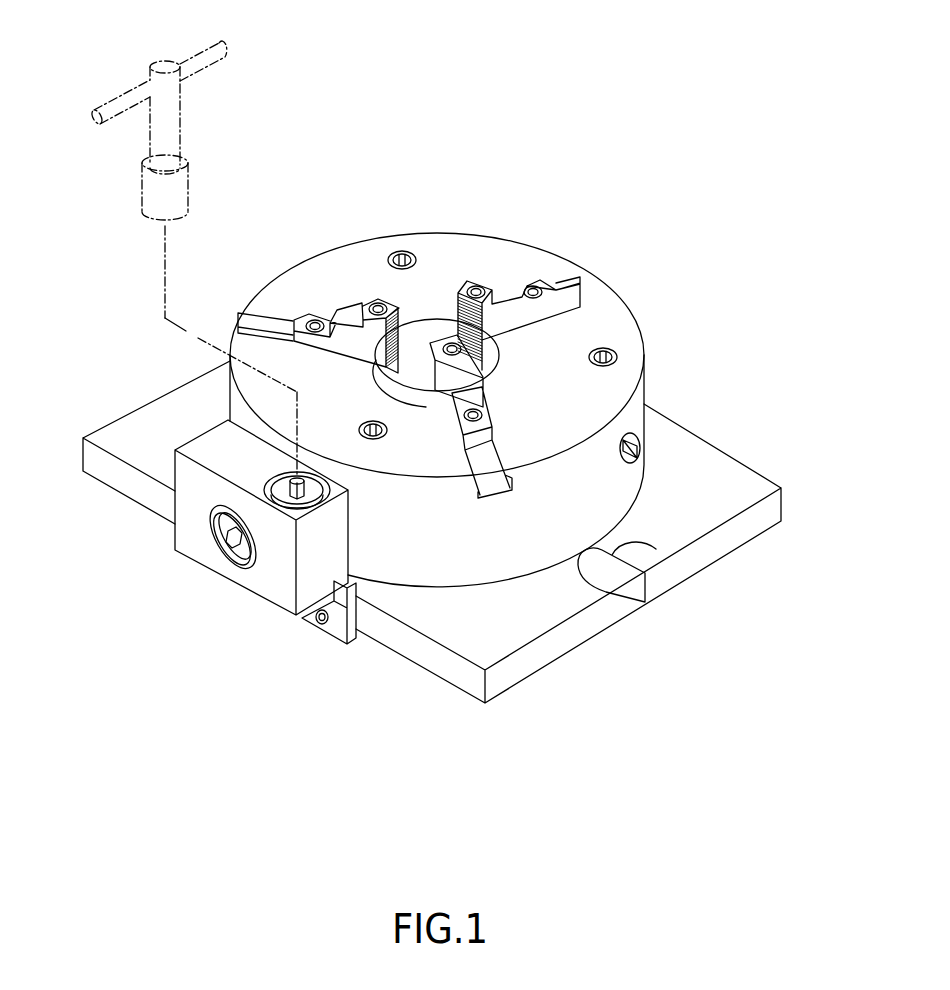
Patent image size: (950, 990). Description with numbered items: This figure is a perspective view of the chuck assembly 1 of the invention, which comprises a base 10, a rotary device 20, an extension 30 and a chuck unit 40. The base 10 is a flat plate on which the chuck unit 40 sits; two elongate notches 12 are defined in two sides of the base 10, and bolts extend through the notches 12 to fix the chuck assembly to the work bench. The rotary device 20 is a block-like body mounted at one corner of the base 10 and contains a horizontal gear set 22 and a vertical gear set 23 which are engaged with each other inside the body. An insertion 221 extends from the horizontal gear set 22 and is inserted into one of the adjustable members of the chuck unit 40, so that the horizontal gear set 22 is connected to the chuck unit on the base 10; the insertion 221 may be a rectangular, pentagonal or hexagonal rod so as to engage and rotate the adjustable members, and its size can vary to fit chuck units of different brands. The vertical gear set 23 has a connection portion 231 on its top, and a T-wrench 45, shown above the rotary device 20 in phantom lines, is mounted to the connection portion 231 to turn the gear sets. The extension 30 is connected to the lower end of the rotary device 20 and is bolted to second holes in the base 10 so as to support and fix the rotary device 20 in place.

The chuck assembly 1 is at (456, 214).
The base 10 is at (728, 442).
The elongate notch 12 is at (658, 552).
The rotary device 20 is at (226, 586).
The horizontal gear set 22 is at (212, 540).
The insertion 221 is at (222, 548).
The vertical gear set 23 is at (268, 488).
The connection portion 231 is at (272, 491).
The extension 30 is at (353, 649).
The chuck unit 40 is at (626, 289).
The T-wrench 45 is at (128, 102).